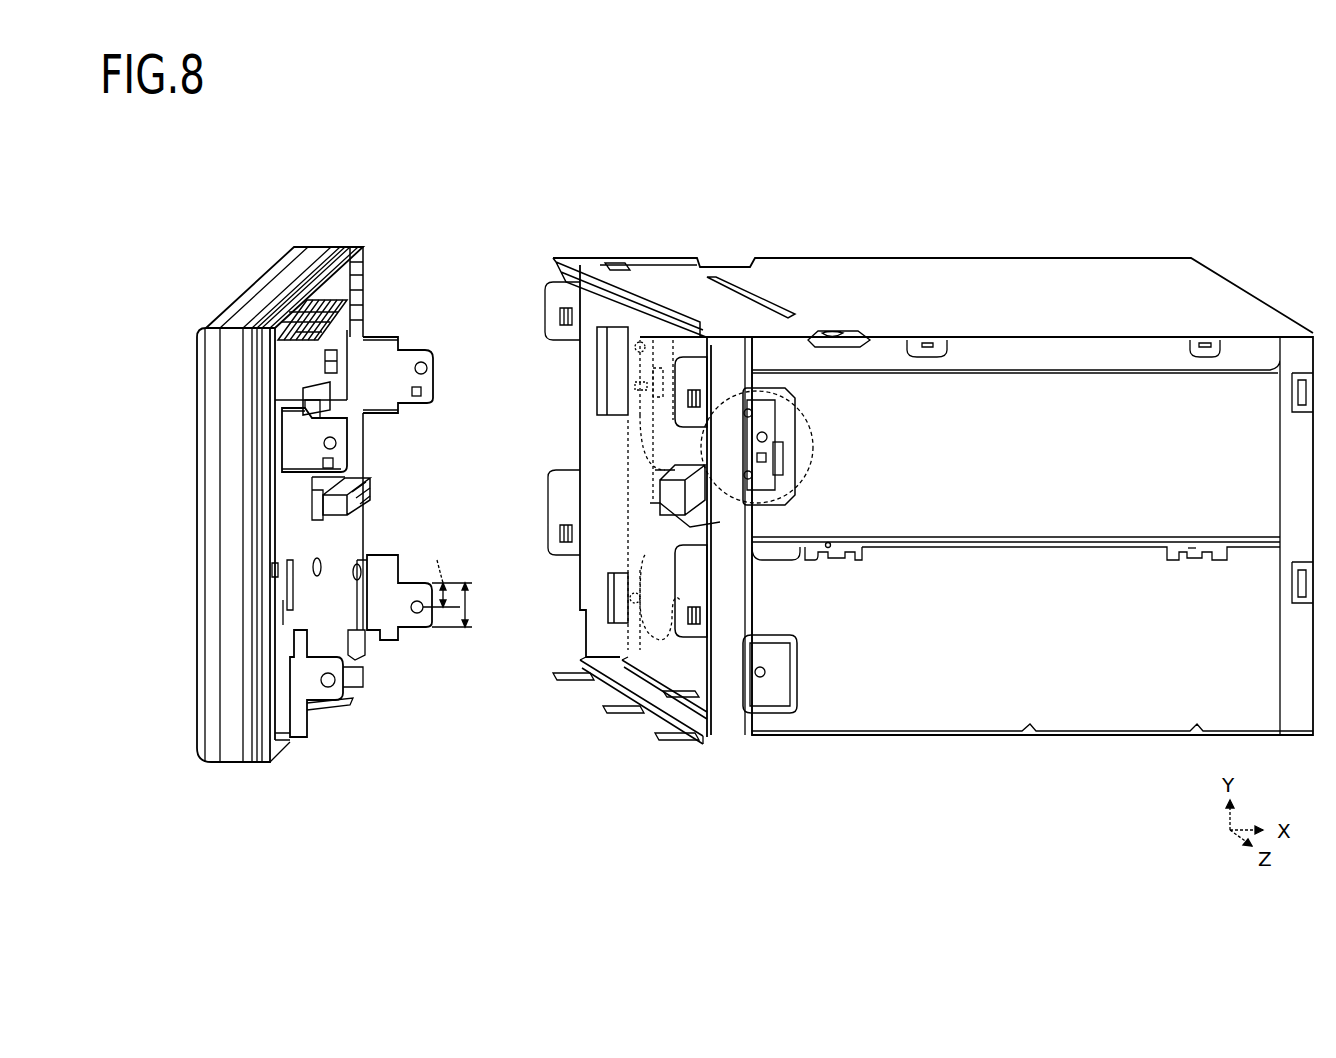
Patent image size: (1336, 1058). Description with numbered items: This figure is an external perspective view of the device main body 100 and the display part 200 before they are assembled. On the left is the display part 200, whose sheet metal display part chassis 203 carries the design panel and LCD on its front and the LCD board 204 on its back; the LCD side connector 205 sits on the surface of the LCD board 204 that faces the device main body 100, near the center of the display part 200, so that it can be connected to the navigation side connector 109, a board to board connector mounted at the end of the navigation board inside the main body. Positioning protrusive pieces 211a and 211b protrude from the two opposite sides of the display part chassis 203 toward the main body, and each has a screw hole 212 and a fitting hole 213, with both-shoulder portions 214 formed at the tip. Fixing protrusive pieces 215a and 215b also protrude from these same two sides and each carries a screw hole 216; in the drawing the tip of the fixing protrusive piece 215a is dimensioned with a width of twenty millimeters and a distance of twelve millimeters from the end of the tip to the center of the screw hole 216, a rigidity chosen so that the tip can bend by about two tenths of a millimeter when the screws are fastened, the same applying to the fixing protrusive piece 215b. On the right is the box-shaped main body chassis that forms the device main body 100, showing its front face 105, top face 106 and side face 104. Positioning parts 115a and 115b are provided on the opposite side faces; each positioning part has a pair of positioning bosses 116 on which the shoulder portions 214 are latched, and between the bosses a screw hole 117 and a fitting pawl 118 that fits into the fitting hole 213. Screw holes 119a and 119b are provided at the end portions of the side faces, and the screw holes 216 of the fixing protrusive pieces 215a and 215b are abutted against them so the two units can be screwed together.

The display part 200 is at (290, 262).
The display part chassis 203 is at (290, 330).
The positioning protrusive piece 211a is at (385, 345).
The positioning protrusive piece 211b is at (291, 467).
The screw hole 212 is at (428, 368).
The fitting hole 213 is at (425, 392).
The both-shoulder portions 214 is at (408, 343).
The LCD side connector 205 is at (321, 512).
The LCD board 204 is at (305, 612).
The fixing protrusive piece 215a is at (393, 640).
The fixing protrusive piece 215b is at (302, 732).
The screw hole 216 is at (417, 612).
The device main body 100 is at (1005, 256).
The side face 104 is at (1085, 738).
The front face 105 is at (568, 272).
The top face 106 is at (1095, 300).
The navigation side connector 109 is at (672, 505).
The positioning part 115a is at (620, 370).
The positioning part 115b is at (735, 410).
The positioning bosses 116 is at (744, 474).
The screw hole 117 is at (764, 432).
The fitting pawl 118 is at (766, 456).
The screw hole 119a is at (633, 600).
The screw hole 119b is at (764, 686).